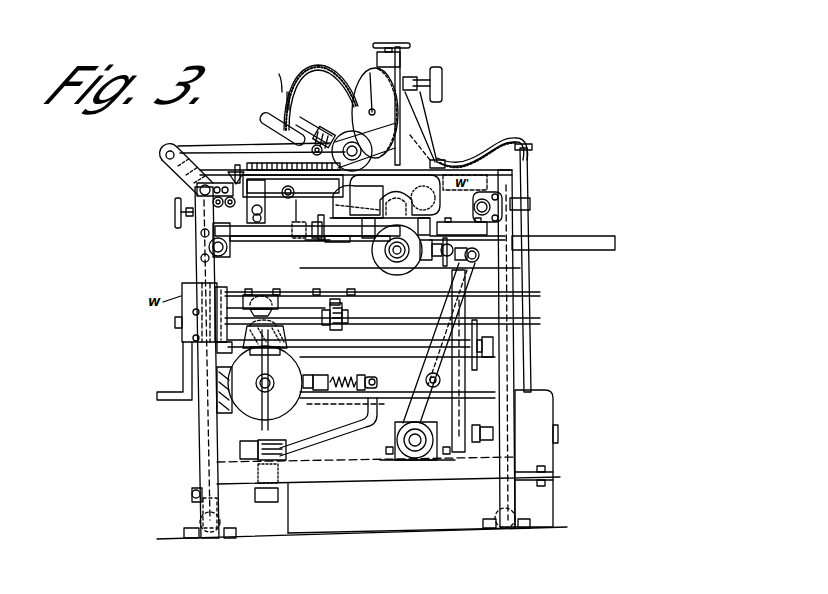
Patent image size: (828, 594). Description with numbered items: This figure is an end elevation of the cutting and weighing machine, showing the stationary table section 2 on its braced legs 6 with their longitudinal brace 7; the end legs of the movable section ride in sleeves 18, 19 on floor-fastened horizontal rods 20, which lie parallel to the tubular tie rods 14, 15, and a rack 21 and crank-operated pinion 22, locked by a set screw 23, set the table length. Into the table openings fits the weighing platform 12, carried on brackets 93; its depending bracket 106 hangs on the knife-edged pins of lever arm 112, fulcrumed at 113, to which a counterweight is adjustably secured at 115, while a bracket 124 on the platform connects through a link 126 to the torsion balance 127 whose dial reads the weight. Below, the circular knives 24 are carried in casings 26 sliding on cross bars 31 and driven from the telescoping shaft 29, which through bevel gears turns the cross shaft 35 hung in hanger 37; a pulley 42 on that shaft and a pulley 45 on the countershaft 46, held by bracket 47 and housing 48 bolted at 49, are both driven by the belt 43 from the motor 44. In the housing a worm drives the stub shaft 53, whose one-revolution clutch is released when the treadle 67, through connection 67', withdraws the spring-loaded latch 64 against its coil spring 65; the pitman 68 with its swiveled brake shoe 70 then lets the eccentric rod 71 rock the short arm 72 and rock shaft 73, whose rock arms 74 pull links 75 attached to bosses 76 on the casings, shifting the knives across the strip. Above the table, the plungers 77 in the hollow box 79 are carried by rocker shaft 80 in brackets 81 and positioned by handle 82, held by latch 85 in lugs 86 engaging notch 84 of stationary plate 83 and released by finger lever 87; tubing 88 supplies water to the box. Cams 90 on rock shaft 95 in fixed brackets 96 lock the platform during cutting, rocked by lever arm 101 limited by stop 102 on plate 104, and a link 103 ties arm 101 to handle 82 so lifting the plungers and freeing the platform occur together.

The table section 2 is at (458, 160).
The legs 6 is at (510, 385).
The longitudinal brace 7 is at (192, 494).
The platform 12 is at (243, 150).
The tubular tie rod 14 is at (210, 248).
The tubular tie rod 15 is at (531, 204).
The sleeve 18 is at (210, 512).
The sleeve 19 is at (530, 496).
The horizontal rods 20 is at (206, 532).
The rack 21 is at (338, 300).
The pinion 22 is at (342, 328).
The set screw 23 is at (182, 348).
The circular knives 24 is at (342, 250).
The casing 26 is at (442, 221).
The telescoping shaft 29 is at (392, 262).
The cross bar 31 is at (242, 238).
The cross shaft 35 is at (580, 240).
The hanger 37 is at (510, 240).
The pulley 42 is at (448, 258).
The belt 43 is at (464, 380).
The motor 44 is at (546, 406).
The pulley 45 is at (478, 335).
The countershaft 46 is at (494, 345).
The bracket 47 is at (531, 355).
The housing 48 is at (265, 380).
The bolts 49 is at (252, 406).
The stub shaft 53 is at (262, 392).
The latch 64 is at (273, 386).
The coil spring 65 is at (340, 375).
The treadle 67 is at (263, 483).
The connection 67' is at (328, 427).
The pitman 68 is at (278, 313).
The brake shoe 70 is at (290, 333).
The eccentric rod 71 is at (387, 370).
The short arm 72 is at (392, 418).
The rock shaft 73 is at (410, 456).
The rock arms 74 is at (425, 376).
The link 75 is at (466, 262).
The boss 76 is at (403, 290).
The plungers 77 is at (252, 162).
The hollow box 79 is at (266, 115).
The rocker shaft 80 is at (410, 122).
The brackets 81 is at (412, 140).
The handle 82 is at (287, 92).
The stationary plate 83 is at (346, 132).
The notch 84 is at (321, 130).
The latch 85 is at (386, 104).
The lugs 86 is at (299, 124).
The finger lever 87 is at (279, 74).
The tubing 88 is at (318, 65).
The cams 90 is at (280, 192).
The brackets 93 is at (240, 178).
The tubular rock shaft 95 is at (318, 238).
The fixed brackets 96 is at (298, 240).
The rock-lever arm 101 is at (178, 168).
The stop 102 is at (230, 174).
The link 103 is at (172, 147).
The plate 104 is at (222, 182).
The bracket 106 is at (256, 201).
The lever arm 112 is at (276, 242).
The fulcrum 113 is at (225, 206).
The counterweight adjustment 115 is at (178, 226).
The bracket 124 is at (337, 243).
The link 126 is at (386, 178).
The torsion balance 127 is at (358, 78).